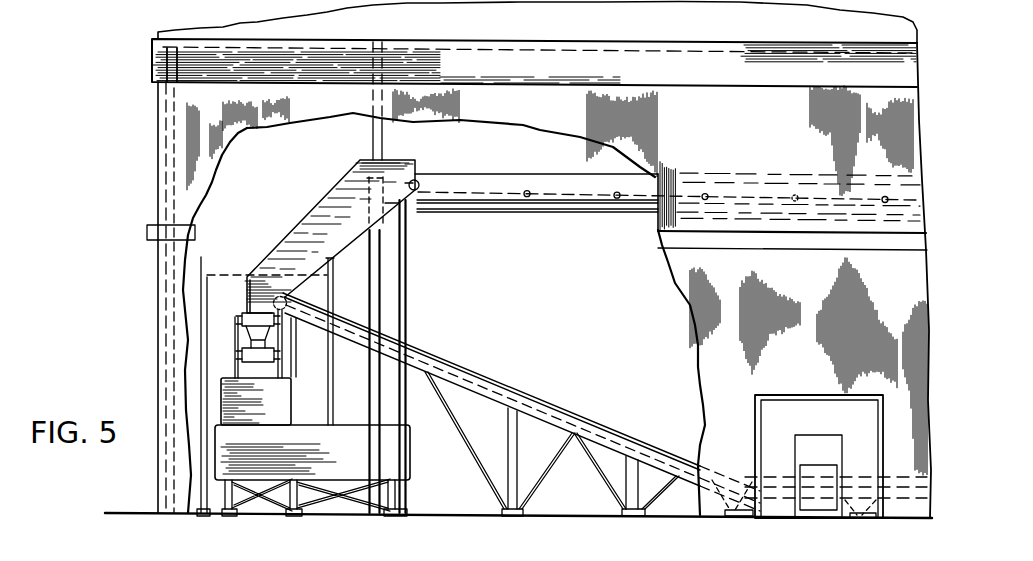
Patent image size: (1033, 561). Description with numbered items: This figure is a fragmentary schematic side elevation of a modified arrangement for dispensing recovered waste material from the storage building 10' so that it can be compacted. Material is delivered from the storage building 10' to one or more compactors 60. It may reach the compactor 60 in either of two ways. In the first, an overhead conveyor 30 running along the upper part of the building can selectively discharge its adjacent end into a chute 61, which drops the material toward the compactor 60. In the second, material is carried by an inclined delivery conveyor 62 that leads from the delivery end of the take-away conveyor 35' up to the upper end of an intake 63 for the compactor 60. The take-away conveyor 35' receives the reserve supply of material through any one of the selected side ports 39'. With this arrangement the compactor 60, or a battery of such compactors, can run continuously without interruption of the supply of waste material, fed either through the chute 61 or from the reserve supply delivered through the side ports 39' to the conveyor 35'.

The storage building 10' is at (557, 280).
The conveyor chute 30 is at (567, 176).
The chute 61 is at (318, 223).
The intake 63 is at (238, 316).
The inclined delivery conveyor 62 is at (606, 428).
The compactor 60 is at (345, 462).
The side ports 39' is at (836, 439).
The take-away conveyor 35' is at (840, 471).